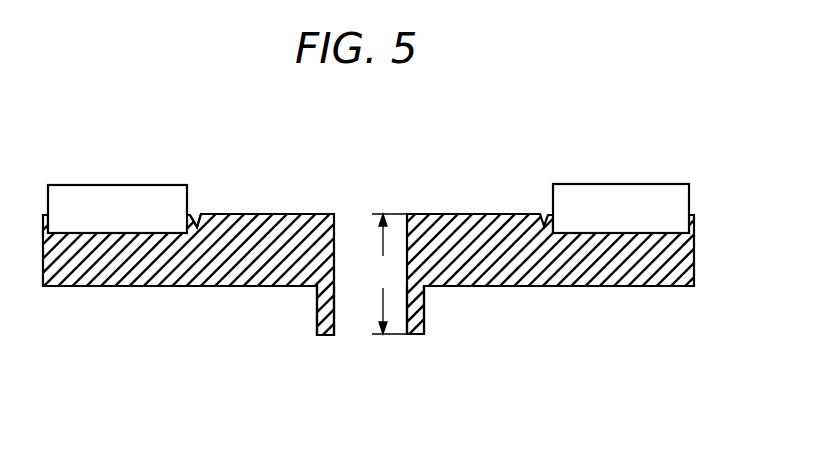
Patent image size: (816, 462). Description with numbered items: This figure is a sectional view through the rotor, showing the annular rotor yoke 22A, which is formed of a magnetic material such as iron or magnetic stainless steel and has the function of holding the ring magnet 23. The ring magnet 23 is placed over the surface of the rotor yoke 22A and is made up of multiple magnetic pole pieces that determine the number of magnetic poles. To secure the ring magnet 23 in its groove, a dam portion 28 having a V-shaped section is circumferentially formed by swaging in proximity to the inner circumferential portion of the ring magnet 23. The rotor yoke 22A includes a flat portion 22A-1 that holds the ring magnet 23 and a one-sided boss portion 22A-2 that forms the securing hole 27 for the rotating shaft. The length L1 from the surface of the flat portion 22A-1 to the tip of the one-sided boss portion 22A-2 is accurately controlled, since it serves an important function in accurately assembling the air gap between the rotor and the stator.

The rotor yoke 22A is at (150, 287).
The flat portion 22A-1 is at (435, 213).
The one-sided boss portion 22A-2 is at (425, 316).
The ring magnet 23 is at (103, 200).
The securing hole 27 is at (318, 295).
The dam portion 28 is at (203, 213).
The length L1 is at (389, 274).